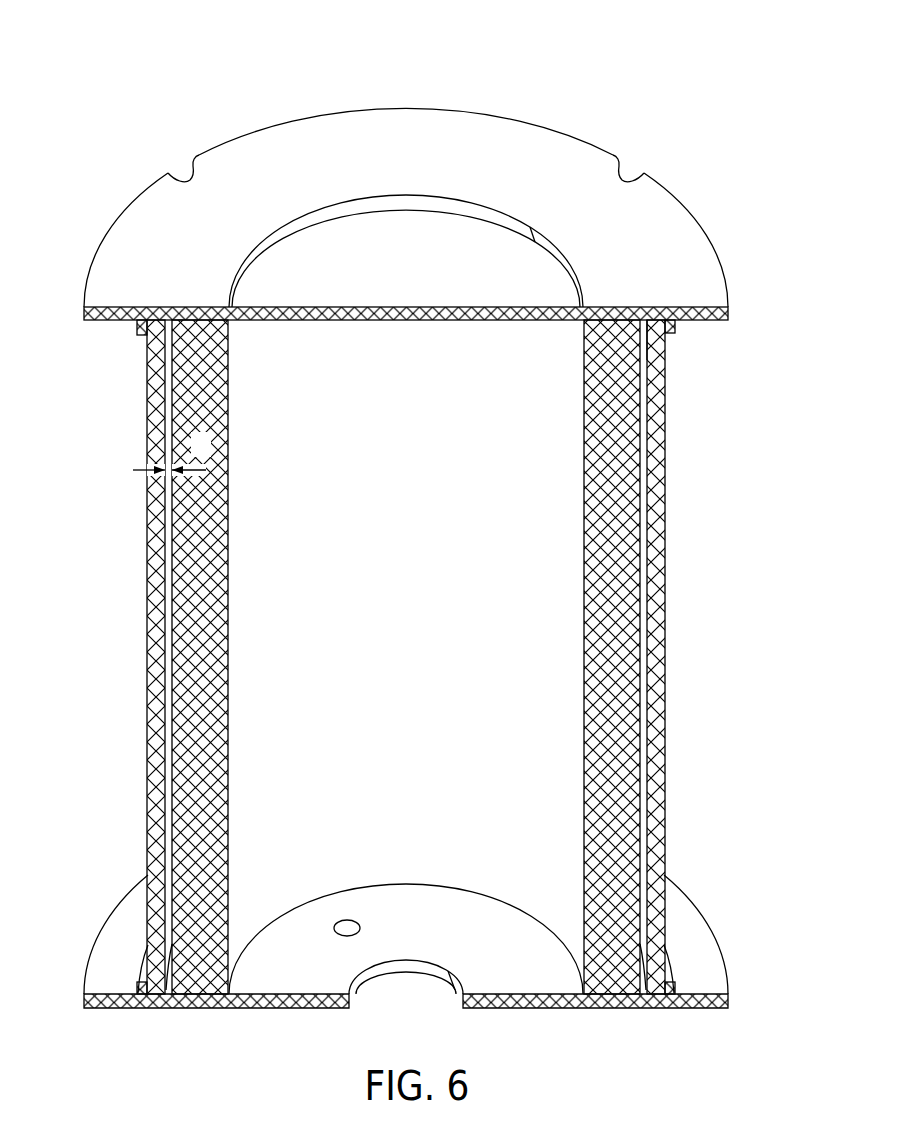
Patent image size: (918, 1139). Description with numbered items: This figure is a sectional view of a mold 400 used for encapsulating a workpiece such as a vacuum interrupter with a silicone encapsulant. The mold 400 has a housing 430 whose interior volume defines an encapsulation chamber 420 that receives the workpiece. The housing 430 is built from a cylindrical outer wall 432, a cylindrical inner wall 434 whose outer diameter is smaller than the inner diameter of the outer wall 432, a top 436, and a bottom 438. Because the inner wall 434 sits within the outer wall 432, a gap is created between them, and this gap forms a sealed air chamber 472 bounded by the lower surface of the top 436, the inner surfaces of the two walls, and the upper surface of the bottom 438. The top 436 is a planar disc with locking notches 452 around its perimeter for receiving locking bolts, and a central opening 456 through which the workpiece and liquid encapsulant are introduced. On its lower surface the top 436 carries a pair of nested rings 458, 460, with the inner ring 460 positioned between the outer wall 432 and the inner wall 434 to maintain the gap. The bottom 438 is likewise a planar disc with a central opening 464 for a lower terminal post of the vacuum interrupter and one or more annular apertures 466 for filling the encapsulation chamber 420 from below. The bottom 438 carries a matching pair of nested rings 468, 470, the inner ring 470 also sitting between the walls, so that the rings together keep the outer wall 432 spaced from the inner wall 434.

The mold 400 is at (722, 74).
The housing 430 is at (618, 108).
The top 436 is at (98, 268).
The locking notches 452 is at (185, 179).
The central opening 456 is at (416, 312).
The nested ring 458 is at (676, 330).
The inner ring 460 is at (648, 345).
The outer wall 432 is at (158, 714).
The inner wall 434 is at (190, 750).
The sealed air chamber 472 is at (168, 608).
The bottom 438 is at (108, 964).
The nested ring 468 is at (672, 988).
The encapsulation chamber 420 is at (493, 812).
The central opening 464 is at (420, 1014).
The annular apertures 466 is at (348, 932).
The inner ring 470 is at (643, 992).